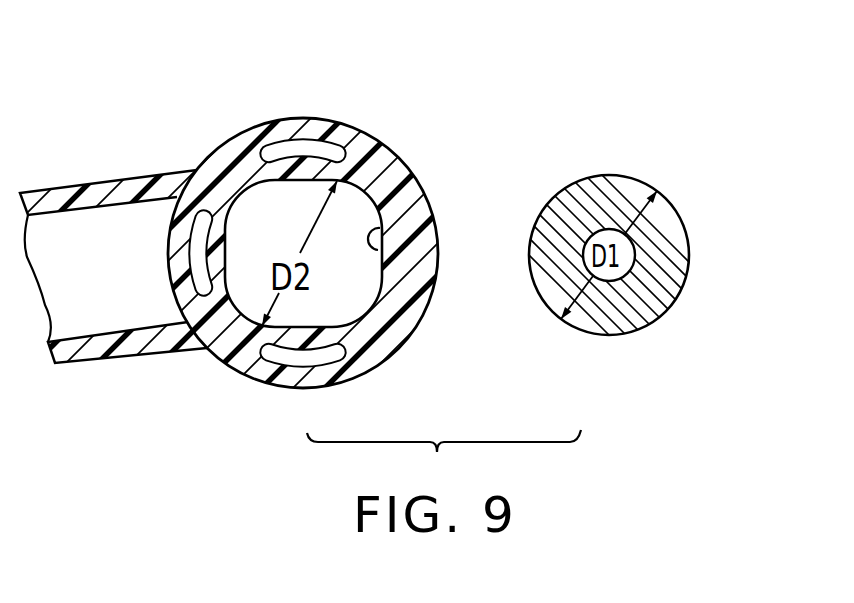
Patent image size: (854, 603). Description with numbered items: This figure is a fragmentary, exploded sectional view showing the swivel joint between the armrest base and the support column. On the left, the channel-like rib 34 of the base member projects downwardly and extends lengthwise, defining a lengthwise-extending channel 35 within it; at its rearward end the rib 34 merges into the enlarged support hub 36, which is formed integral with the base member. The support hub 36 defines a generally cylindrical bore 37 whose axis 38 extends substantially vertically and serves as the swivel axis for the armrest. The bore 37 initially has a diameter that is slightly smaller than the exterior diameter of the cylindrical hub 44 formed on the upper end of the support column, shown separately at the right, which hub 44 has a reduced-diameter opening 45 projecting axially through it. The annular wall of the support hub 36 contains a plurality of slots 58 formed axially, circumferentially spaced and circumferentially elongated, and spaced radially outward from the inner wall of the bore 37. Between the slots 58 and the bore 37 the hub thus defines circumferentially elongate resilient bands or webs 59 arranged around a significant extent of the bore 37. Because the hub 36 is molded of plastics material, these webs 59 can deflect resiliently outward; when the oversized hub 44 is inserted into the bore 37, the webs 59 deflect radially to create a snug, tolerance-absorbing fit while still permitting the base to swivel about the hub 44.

The channel-like rib 34 is at (137, 340).
The channel 35 is at (55, 210).
The support hub 36 is at (368, 334).
The cylindrical bore 37 is at (378, 230).
The axis 38 is at (300, 253).
The cylindrical hub 44 is at (660, 222).
The reduced-diameter opening 45 is at (616, 275).
The slots 58 is at (306, 137).
The resilient bands or webs 59 is at (310, 168).